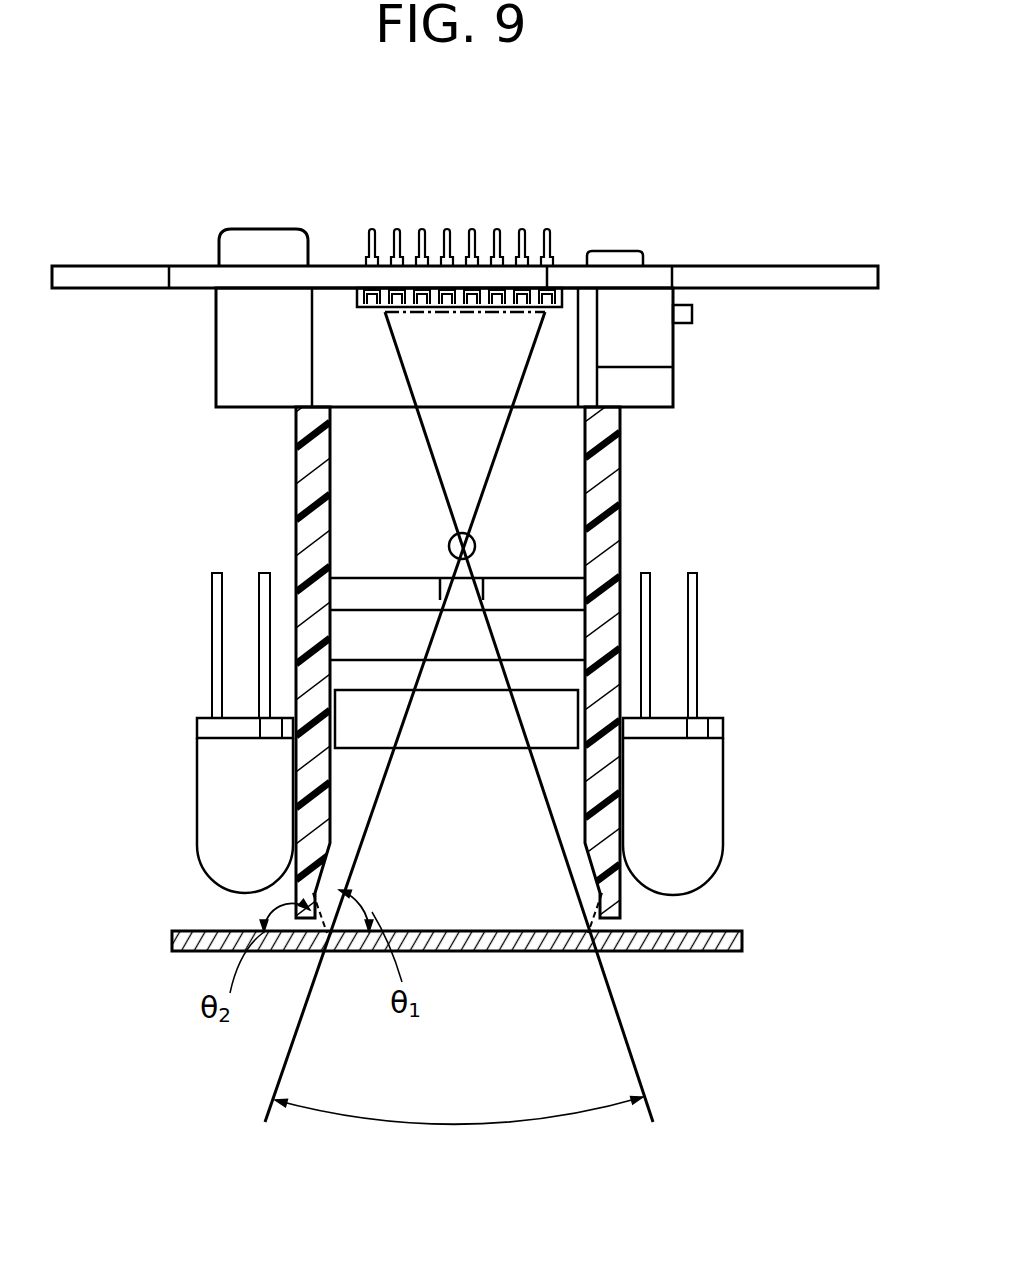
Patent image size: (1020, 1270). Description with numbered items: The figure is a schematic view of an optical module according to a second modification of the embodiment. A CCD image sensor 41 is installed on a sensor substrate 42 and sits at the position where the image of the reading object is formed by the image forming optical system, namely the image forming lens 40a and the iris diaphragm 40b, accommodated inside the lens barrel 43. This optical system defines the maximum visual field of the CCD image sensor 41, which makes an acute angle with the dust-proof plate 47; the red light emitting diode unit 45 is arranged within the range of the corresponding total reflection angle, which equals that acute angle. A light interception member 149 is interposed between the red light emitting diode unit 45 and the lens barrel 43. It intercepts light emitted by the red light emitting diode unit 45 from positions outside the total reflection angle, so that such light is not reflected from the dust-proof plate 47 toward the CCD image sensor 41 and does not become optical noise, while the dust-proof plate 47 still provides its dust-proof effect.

The image forming lens 40a is at (480, 538).
The iris diaphragm 40b is at (482, 578).
The CCD image sensor 41 is at (545, 334).
The sensor substrate 42 is at (768, 276).
The lens barrel 43 is at (362, 549).
The red light emitting diode unit 45 is at (222, 860).
The dust-proof plate 47 is at (668, 952).
The light interception member 149 is at (300, 468).